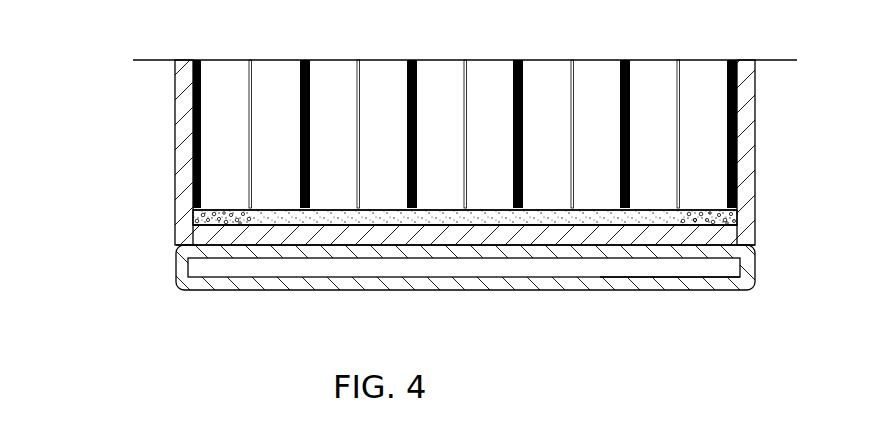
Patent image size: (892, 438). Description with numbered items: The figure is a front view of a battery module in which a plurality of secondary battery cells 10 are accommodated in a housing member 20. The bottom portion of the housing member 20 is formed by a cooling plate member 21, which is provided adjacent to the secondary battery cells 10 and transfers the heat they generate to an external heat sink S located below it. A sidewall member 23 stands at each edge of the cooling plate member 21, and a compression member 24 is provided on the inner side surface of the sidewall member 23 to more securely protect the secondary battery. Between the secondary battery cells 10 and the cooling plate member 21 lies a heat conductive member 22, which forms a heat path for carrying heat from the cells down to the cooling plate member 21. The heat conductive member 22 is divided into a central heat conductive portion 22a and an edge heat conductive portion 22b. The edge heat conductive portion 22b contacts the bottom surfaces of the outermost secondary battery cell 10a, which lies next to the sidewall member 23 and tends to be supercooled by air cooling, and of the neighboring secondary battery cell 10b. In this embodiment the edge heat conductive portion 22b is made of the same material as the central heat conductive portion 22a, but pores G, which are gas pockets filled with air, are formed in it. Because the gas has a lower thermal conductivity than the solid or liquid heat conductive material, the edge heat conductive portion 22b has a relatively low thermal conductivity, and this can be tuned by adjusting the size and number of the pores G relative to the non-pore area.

The secondary battery cells 10 is at (818, 89).
The outermost secondary battery cell 10a is at (703, 128).
The secondary battery cell 10b is at (653, 90).
The housing member 20 is at (62, 95).
The cooling plate member 21 is at (333, 227).
The heat conductive member 22 is at (104, 219).
The central heat conductive portion 22a is at (343, 220).
The edge heat conductive portion 22b is at (200, 213).
The sidewall member 23 is at (184, 97).
The compression member 24 is at (193, 124).
The heat sink S is at (642, 283).
The pores G is at (693, 222).